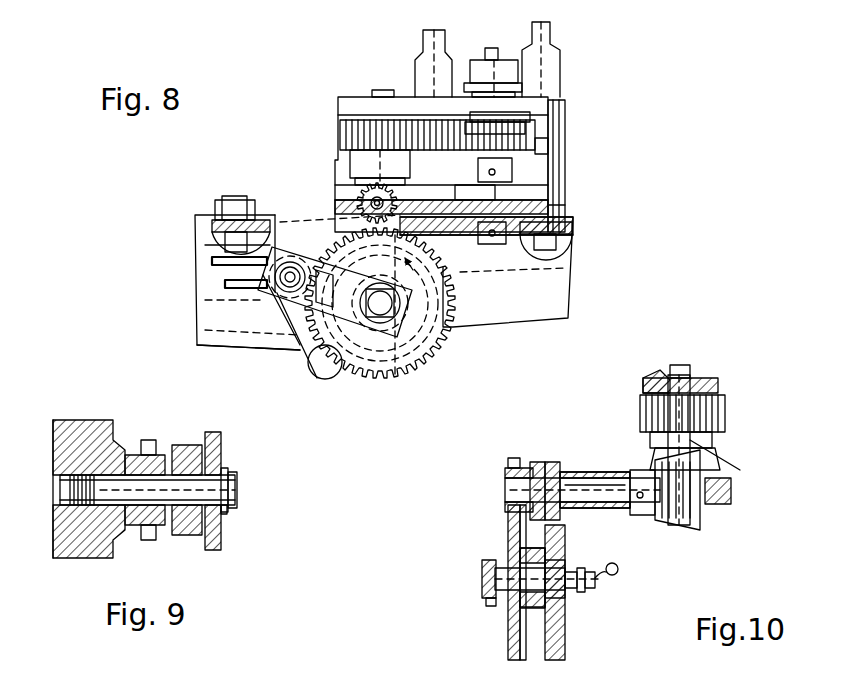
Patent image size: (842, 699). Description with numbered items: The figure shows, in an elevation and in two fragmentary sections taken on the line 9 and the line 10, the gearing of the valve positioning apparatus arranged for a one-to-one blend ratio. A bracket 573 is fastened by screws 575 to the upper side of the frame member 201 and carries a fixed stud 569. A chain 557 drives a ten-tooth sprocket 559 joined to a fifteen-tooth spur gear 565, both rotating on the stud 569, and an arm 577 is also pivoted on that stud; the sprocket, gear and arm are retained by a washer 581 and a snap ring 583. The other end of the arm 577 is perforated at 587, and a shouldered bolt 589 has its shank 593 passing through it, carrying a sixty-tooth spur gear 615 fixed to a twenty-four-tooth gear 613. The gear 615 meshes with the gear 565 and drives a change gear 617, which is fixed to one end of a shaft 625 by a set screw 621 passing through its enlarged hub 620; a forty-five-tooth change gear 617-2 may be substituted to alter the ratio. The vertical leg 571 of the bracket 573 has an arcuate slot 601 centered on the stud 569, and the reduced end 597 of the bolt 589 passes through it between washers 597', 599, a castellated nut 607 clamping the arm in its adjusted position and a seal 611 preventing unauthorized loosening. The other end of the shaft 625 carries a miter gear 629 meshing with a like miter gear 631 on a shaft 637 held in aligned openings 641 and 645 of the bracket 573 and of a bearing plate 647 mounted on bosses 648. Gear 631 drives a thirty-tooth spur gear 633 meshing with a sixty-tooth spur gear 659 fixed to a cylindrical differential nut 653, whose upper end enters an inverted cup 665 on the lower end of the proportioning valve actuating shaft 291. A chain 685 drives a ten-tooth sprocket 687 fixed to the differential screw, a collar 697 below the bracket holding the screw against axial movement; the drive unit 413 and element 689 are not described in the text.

In FIG. 8, the section line 10— 10 is at (376, 82).
In FIG. 8, the section line 9— 9 is at (290, 242).
In FIG. 8, the frame member 201 is at (205, 303).
In FIG. 8, the proportioning valve actuating shaft 291 is at (490, 48).
In FIG. 8, the drive unit 413 is at (577, 187).
In FIG. 8, the chain 557 is at (228, 260).
In FIG. 8, the sprocket 559 is at (300, 352).
In FIG. 9, the sprocket 559 is at (149, 440).
In FIG. 8, the spur gear 565 is at (286, 290).
In FIG. 9, the spur gear 565 is at (187, 445).
In FIG. 8, the stud 569 is at (262, 285).
In FIG. 9, the stud 569 is at (127, 487).
In FIG. 8, the vertical leg 571 is at (305, 354).
In FIG. 9, the vertical leg 571 is at (85, 425).
In FIG. 10, the vertical leg 571 is at (556, 645).
In FIG. 8, the bracket 573 is at (256, 199).
In FIG. 9, the bracket 573 is at (50, 422).
In FIG. 10, the bracket 573 is at (587, 466).
In FIG. 8, the screws 575 is at (222, 236).
In FIG. 8, the arm 577 is at (396, 345).
In FIG. 9, the arm 577 is at (222, 542).
In FIG. 10, the arm 577 is at (504, 545).
In FIG. 9, the washer 581 is at (226, 510).
In FIG. 9, the snap ring 583 is at (228, 468).
In FIG. 10, the perforation 587 is at (498, 580).
In FIG. 8, the shouldered bolt 589 is at (400, 330).
In FIG. 10, the shouldered bolt 589 is at (480, 565).
In FIG. 10, the shank 593 is at (500, 586).
In FIG. 10, the reduced end of bolt 597 is at (591, 616).
In FIG. 10, the washer 597' is at (616, 602).
In FIG. 10, the washer 599 is at (618, 567).
In FIG. 8, the arcuate slot 601 is at (331, 362).
In FIG. 10, the arcuate slot 601 is at (562, 570).
In FIG. 10, the nut 607 is at (585, 585).
In FIG. 10, the seal 611 is at (618, 573).
In FIG. 8, the small gear 613 is at (448, 325).
In FIG. 10, the small gear 613 is at (535, 612).
In FIG. 8, the large spur gear 615 is at (422, 320).
In FIG. 10, the large spur gear 615 is at (515, 627).
In FIG. 8, the change gear 617 is at (365, 199).
In FIG. 10, the change gear 617 is at (510, 466).
In FIG. 10, the change gear 617-2 is at (732, 691).
In FIG. 10, the enlarged hub 620 is at (537, 462).
In FIG. 10, the set screw 621 is at (548, 462).
In FIG. 8, the shaft 625 is at (360, 204).
In FIG. 10, the shaft 625 is at (604, 480).
In FIG. 8, the miter gear 629 is at (370, 197).
In FIG. 10, the miter gear 629 is at (650, 472).
In FIG. 8, the miter gear 631 is at (375, 194).
In FIG. 10, the miter gear 631 is at (700, 468).
In FIG. 8, the spur gear 633 is at (352, 124).
In FIG. 10, the spur gear 633 is at (697, 420).
In FIG. 8, the shaft 637 is at (383, 95).
In FIG. 10, the shaft 637 is at (689, 372).
In FIG. 10, the opening 641 is at (688, 500).
In FIG. 10, the opening 645 is at (665, 385).
In FIG. 8, the bearing plate 647 is at (566, 100).
In FIG. 10, the bearing plate 647 is at (715, 386).
In FIG. 8, the bosses 648 is at (556, 205).
In FIG. 8, the differential nut 653 is at (496, 128).
In FIG. 8, the spur gear 659 is at (560, 146).
In FIG. 8, the cup 665 is at (517, 72).
In FIG. 8, the chain 685 is at (512, 205).
In FIG. 8, the sprocket 687 is at (470, 190).
In FIG. 8, the switch 689 is at (512, 168).
In FIG. 8, the collar 697 is at (480, 238).